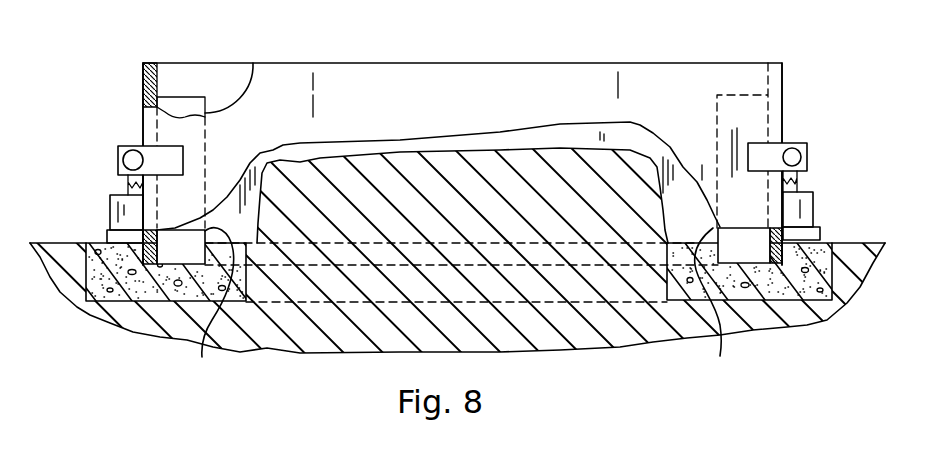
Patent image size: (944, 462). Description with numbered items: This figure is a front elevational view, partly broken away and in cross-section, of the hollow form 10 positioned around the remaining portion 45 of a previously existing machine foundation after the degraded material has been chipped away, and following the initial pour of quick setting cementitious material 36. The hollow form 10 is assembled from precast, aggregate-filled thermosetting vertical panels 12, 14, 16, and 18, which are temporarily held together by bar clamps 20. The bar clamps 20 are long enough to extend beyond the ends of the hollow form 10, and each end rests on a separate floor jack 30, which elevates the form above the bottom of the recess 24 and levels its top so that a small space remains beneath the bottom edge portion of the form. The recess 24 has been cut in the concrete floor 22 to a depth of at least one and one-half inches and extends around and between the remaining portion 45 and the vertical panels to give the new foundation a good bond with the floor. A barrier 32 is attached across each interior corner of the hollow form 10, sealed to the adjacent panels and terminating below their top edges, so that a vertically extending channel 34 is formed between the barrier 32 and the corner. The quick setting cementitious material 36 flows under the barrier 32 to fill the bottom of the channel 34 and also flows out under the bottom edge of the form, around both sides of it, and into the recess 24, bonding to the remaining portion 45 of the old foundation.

The hollow form 10 is at (425, 46).
The vertical panel 12 is at (452, 108).
The vertical panel 14 is at (203, 80).
The vertical panel 16 is at (142, 132).
The vertical panel 18 is at (783, 132).
The bar clamp 20 is at (123, 160).
The concrete floor 22 is at (43, 242).
The recess 24 is at (98, 302).
The floor jack 30 is at (128, 205).
The barrier 32 is at (232, 62).
The vertically extending channel 34 is at (180, 95).
The quick setting cementitious material 36 is at (787, 287).
The remaining portion of the previously existing foundation 45 is at (557, 160).